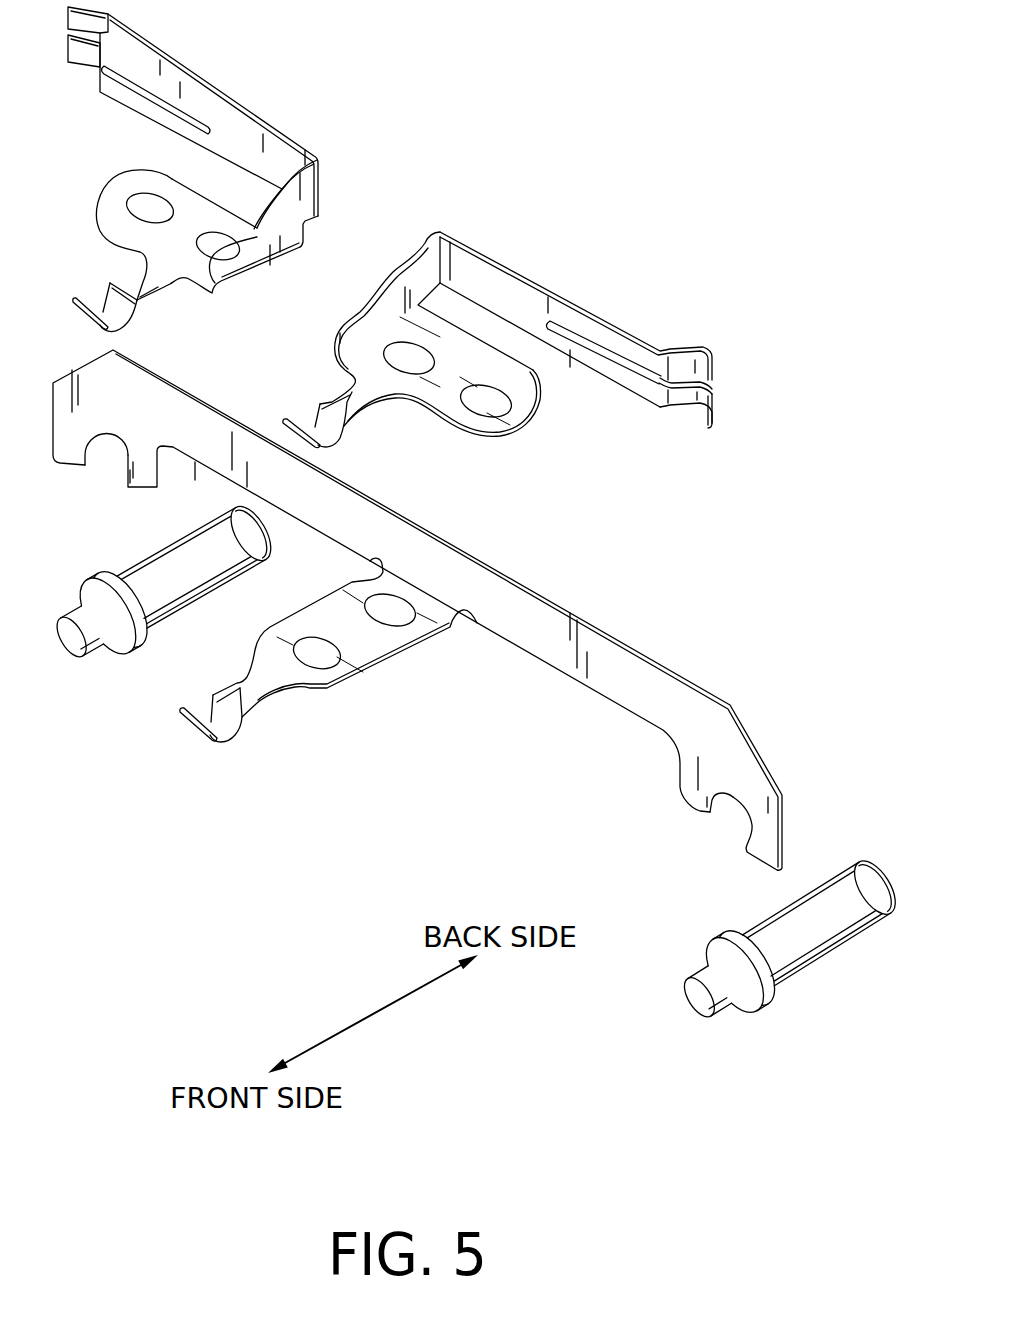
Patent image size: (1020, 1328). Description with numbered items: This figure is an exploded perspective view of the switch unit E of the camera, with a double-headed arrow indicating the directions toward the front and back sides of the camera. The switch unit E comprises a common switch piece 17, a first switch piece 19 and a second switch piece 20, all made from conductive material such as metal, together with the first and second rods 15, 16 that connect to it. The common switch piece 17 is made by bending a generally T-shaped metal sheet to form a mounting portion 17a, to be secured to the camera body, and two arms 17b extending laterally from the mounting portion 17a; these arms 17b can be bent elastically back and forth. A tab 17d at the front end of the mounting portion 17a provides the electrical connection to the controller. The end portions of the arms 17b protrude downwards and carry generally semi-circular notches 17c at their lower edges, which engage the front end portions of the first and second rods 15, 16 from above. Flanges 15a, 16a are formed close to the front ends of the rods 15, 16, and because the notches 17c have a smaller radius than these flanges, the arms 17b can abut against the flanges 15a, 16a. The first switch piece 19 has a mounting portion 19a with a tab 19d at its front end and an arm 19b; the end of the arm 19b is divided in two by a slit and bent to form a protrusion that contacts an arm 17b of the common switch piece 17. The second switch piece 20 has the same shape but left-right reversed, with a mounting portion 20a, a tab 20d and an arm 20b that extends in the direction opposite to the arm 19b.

The switch unit E is at (443, 106).
The first rod 15 is at (800, 943).
The flange 15a is at (745, 1012).
The second rod 16 is at (160, 567).
The flange 16a is at (123, 647).
The common switch piece 17 is at (532, 576).
The mounting portion 17a is at (380, 653).
The arms 17b is at (205, 428).
The semi-circular notches 17c is at (82, 468).
The tab 17d is at (225, 728).
The first switch piece 19 is at (474, 232).
The mounting portion 19a is at (520, 407).
The arm 19b is at (533, 303).
The tab 19d is at (330, 433).
The second switch piece 20 is at (300, 130).
The mounting portion 20a is at (115, 193).
The arm 20b is at (230, 123).
The tab 20d is at (105, 307).